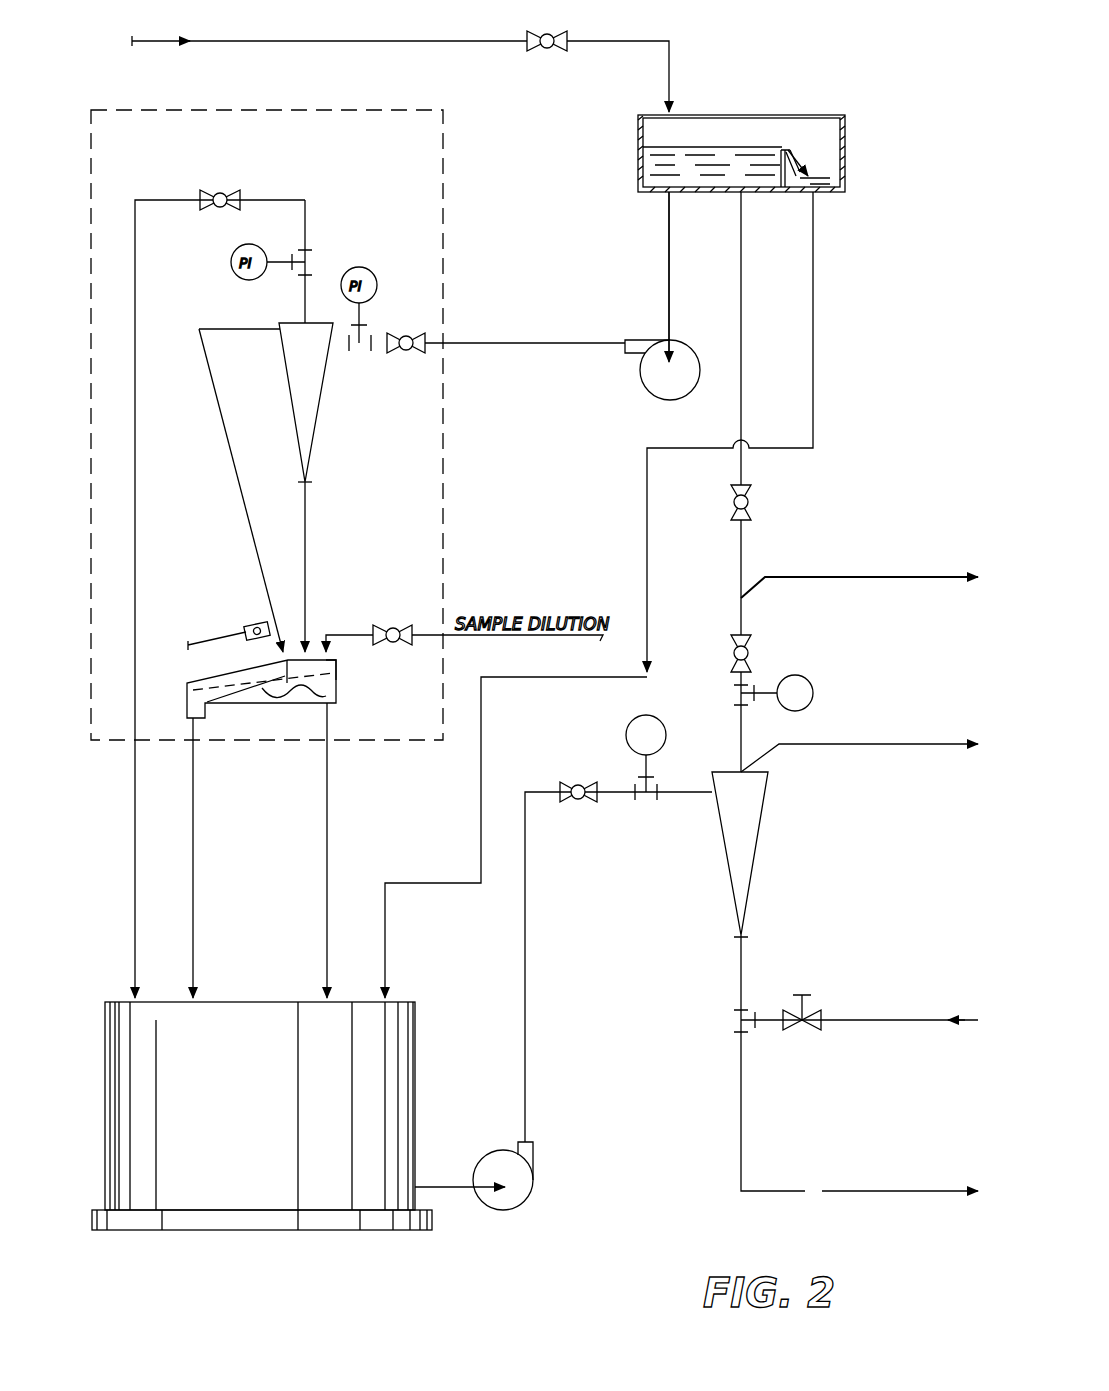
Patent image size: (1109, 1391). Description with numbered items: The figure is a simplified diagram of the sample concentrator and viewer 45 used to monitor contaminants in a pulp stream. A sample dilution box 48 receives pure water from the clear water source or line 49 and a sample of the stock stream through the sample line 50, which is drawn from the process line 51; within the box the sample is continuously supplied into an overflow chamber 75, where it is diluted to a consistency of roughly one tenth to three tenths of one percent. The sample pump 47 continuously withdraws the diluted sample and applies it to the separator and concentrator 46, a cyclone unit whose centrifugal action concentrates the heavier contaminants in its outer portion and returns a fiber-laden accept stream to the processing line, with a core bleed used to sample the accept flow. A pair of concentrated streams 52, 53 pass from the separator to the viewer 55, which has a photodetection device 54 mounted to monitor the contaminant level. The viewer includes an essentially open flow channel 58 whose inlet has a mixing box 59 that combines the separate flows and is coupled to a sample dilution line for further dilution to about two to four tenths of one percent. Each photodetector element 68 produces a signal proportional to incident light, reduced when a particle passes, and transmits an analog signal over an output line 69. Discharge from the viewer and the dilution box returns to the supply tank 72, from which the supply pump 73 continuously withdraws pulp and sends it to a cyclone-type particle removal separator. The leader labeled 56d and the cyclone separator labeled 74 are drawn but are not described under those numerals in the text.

The sample concentrator and viewer 45 is at (411, 446).
The separator and concentrator 46 is at (330, 376).
The sample pump 47 is at (658, 385).
The sample dilution box 48 is at (767, 235).
The clear water source or line 49 is at (462, 27).
The sample line 50 is at (742, 311).
The process line 51 is at (866, 578).
The concentrated stream 52 is at (307, 515).
The concentrated stream 53 is at (239, 493).
The photodetection device 54 is at (250, 645).
The viewer 55 is at (338, 690).
The sensor 56d is at (270, 330).
The open flow channel 58 is at (233, 700).
The mixing box 59 is at (336, 669).
The element 68 is at (254, 624).
The output line 69 is at (203, 641).
The supply tank 72 is at (288, 979).
The supply pump 73 is at (512, 1206).
The cleaner hydrocyclone 74 is at (728, 879).
The overflow chamber 75 is at (740, 150).